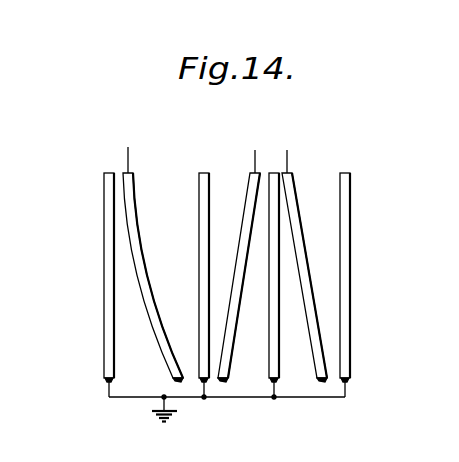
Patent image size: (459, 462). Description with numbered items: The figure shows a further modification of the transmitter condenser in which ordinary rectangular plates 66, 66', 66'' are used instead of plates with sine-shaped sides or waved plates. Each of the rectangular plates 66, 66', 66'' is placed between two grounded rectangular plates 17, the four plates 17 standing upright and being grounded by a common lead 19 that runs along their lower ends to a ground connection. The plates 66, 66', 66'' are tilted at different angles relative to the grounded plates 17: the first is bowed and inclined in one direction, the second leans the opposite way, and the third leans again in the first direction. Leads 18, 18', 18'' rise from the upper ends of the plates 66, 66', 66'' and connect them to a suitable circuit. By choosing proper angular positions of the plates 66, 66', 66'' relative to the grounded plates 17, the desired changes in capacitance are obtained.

The rectangular plates 17 is at (104, 288).
The lead 18 is at (147, 155).
The lead 18' is at (236, 152).
The lead 18'' is at (310, 156).
The common lead 19 is at (257, 398).
The rectangular plate 66 is at (153, 277).
The rectangular plate 66' is at (239, 277).
The rectangular plate 66'' is at (304, 277).